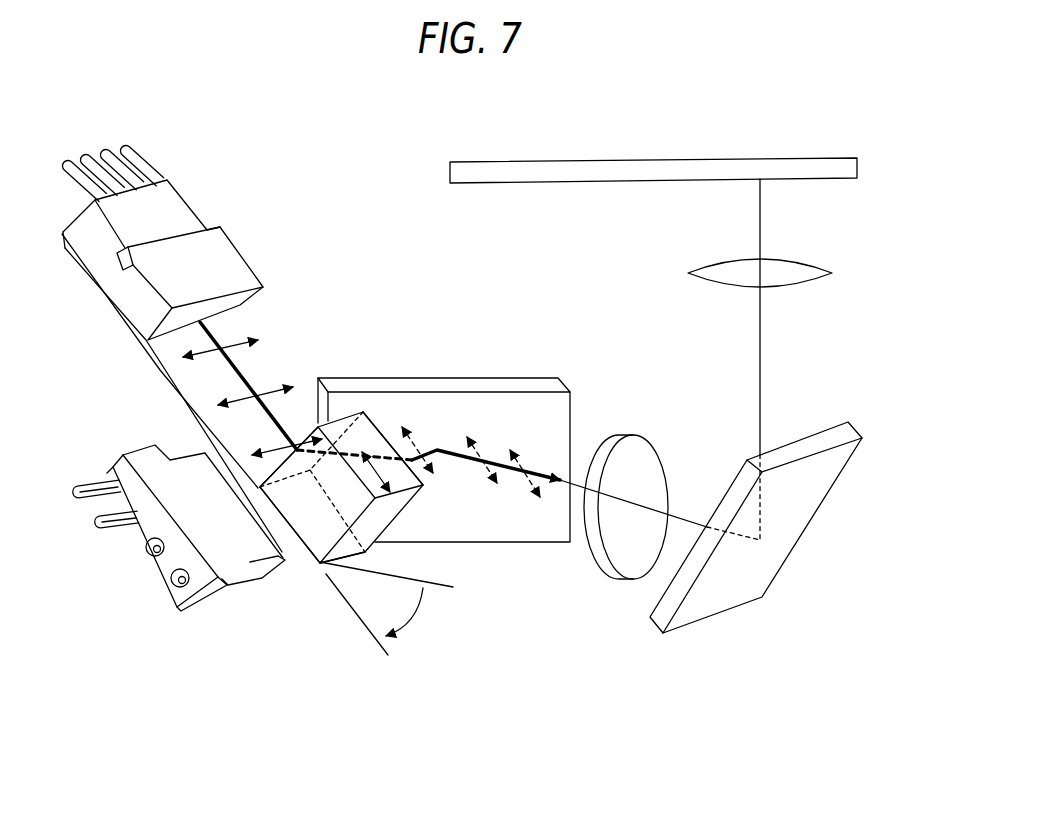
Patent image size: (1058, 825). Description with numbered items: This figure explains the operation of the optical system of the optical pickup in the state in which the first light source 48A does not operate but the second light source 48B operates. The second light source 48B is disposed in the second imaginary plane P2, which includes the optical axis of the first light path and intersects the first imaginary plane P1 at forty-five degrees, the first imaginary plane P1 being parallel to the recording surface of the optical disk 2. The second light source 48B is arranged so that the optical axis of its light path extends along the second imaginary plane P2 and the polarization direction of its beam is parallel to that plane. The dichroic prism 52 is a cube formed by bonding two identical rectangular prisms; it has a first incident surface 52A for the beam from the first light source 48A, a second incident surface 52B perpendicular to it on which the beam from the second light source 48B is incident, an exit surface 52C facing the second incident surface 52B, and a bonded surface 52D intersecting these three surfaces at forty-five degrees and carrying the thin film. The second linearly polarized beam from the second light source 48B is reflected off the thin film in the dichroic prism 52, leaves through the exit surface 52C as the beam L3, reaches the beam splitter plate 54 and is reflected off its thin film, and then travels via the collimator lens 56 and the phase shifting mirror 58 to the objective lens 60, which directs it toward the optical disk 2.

The optical disk 2 is at (834, 180).
The first light source 48A is at (125, 442).
The second light source 48B is at (200, 200).
The dichroic prism 52 is at (349, 411).
The first incident surface 52A is at (288, 556).
The second incident surface 52B is at (301, 436).
The exit surface 52C is at (378, 424).
The bonded surface 52D is at (330, 566).
The beam splitter plate 54 is at (512, 378).
The collimator lens 56 is at (618, 566).
The phase shifting mirror 58 is at (742, 587).
The objective lens 60 is at (808, 288).
The combined laser beam L3 is at (413, 458).
The first imaginary plane P1 is at (453, 590).
The second imaginary plane P2 is at (389, 650).